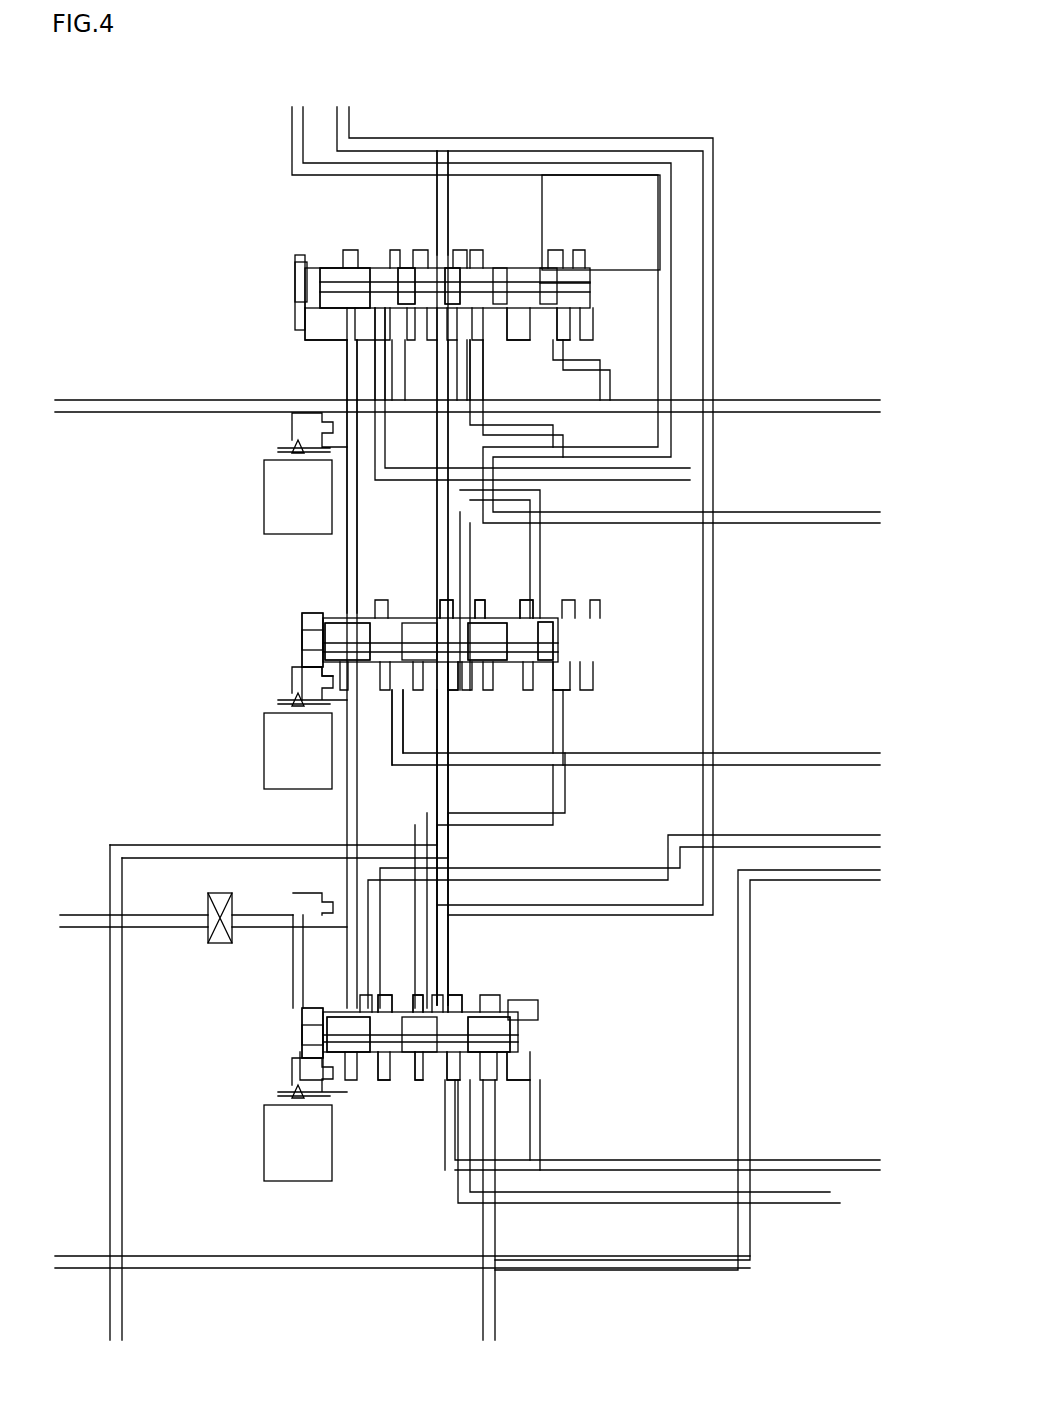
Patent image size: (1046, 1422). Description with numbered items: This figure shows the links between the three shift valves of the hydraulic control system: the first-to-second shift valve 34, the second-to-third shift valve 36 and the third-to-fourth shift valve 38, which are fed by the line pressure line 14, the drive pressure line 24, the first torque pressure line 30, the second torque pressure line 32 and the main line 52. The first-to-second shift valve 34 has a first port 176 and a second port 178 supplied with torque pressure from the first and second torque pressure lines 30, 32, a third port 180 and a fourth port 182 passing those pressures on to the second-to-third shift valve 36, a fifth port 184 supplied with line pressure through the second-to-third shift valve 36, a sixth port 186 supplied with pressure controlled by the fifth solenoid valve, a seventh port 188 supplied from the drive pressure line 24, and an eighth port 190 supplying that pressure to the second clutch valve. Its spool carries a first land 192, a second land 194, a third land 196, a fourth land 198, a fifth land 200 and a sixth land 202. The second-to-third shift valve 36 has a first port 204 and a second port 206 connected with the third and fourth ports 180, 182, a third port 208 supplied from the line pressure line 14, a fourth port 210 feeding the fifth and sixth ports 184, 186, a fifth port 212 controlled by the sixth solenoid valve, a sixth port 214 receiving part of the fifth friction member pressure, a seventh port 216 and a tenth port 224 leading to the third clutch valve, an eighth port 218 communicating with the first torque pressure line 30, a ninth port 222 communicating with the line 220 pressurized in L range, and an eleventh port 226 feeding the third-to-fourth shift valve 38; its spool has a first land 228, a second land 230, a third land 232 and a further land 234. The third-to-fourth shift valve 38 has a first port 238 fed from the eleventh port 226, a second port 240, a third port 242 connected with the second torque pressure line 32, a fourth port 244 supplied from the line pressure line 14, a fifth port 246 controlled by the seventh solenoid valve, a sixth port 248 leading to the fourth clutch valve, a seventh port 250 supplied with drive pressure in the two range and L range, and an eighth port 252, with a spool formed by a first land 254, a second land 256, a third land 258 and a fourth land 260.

The line pressure line 14 is at (75, 915).
The drive pressure line 24 is at (112, 400).
The first torque pressure line 30 is at (292, 127).
The second torque pressure line 32 is at (487, 138).
The 1-2 shift valve 34 is at (258, 281).
The 2-3 shift valve 36 is at (258, 636).
The 3-4 shift valve 38 is at (258, 1028).
The main line 52 is at (312, 1268).
The first port 176 is at (545, 262).
The second port 178 is at (437, 262).
The third port 180 is at (563, 320).
The fourth port 182 is at (472, 330).
The fifth port 184 is at (378, 320).
The sixth port 186 is at (310, 325).
The seventh port 188 is at (352, 330).
The eighth port 190 is at (440, 320).
The first land 192 is at (300, 262).
The second land 194 is at (338, 268).
The third land 196 is at (400, 268).
The fourth land 198 is at (450, 262).
The fifth land 200 is at (512, 320).
The sixth land 202 is at (565, 283).
The first port 204 is at (350, 612).
The second port 206 is at (550, 625).
The third port 208 is at (330, 678).
The fourth port 210 is at (310, 612).
The fifth port 212 is at (300, 682).
The sixth port 214 is at (447, 610).
The seventh port 216 is at (480, 612).
The eighth port 218 is at (527, 612).
The line 220 is at (110, 1127).
The ninth port 222 is at (455, 660).
The tenth port 224 is at (395, 700).
The eleventh port 226 is at (565, 672).
The first land 228 is at (305, 640).
The second land 230 is at (345, 640).
The third land 232 is at (445, 660).
The land 234 is at (488, 650).
The first port 238 is at (420, 1005).
The second port 240 is at (385, 1005).
The third port 242 is at (455, 1005).
The fourth port 244 is at (248, 927).
The fifth port 246 is at (305, 1035).
The sixth port 248 is at (388, 1085).
The seventh port 250 is at (512, 1068).
The eighth port 252 is at (455, 1070).
The first land 254 is at (310, 1012).
The second land 256 is at (345, 1035).
The third land 258 is at (422, 1085).
The fourth land 260 is at (500, 1027).